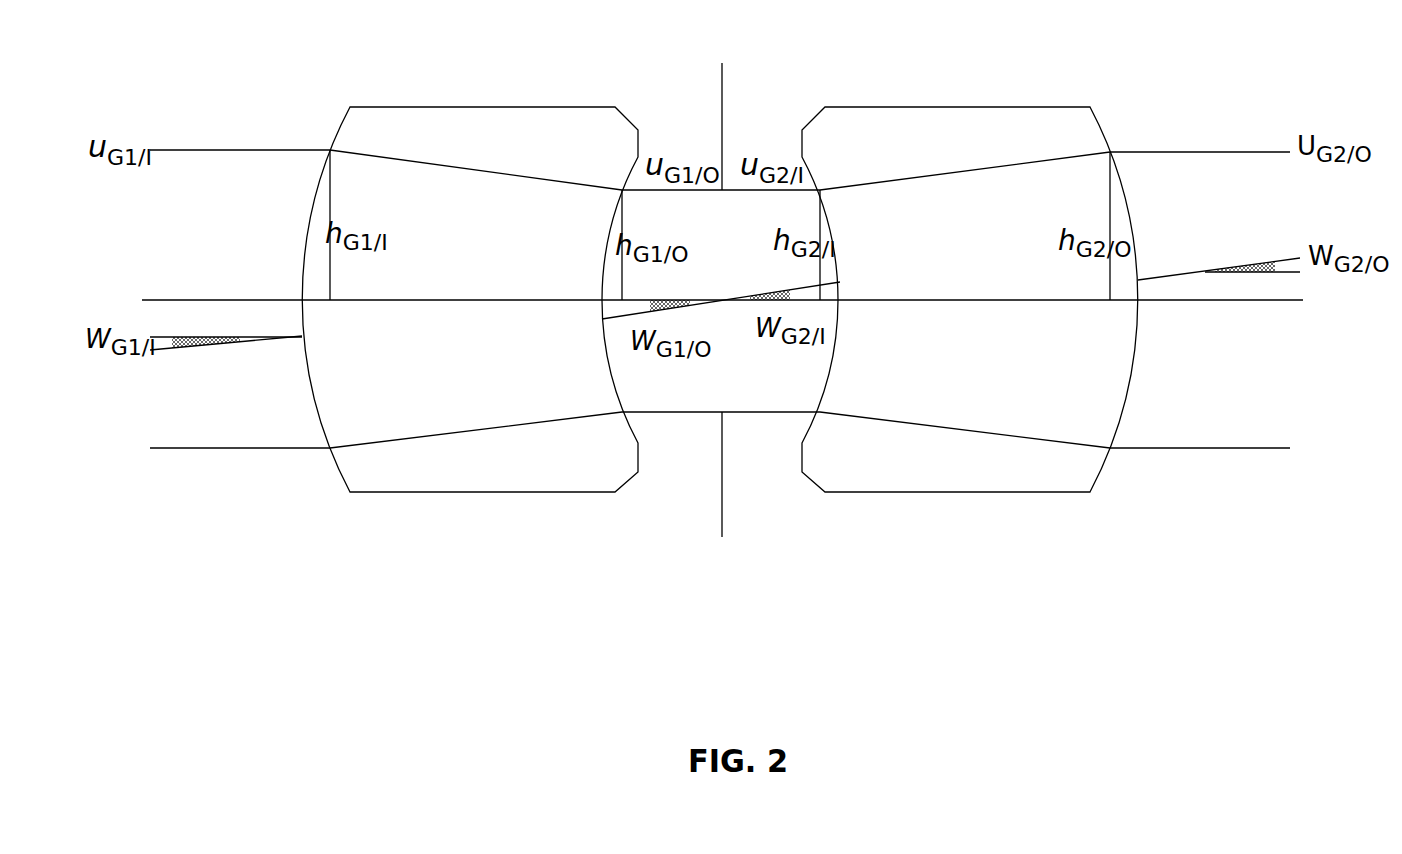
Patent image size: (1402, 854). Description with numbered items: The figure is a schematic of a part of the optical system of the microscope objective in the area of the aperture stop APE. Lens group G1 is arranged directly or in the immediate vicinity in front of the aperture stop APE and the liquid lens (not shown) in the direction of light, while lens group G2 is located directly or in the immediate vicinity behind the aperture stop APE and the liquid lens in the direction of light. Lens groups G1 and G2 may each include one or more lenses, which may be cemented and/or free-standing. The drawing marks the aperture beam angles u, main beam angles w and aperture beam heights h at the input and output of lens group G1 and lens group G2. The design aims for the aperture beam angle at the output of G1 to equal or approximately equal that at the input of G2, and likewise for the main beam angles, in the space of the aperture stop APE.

The lens group G1 is at (470, 282).
The lens group G2 is at (970, 282).
The aperture stop APE is at (725, 282).